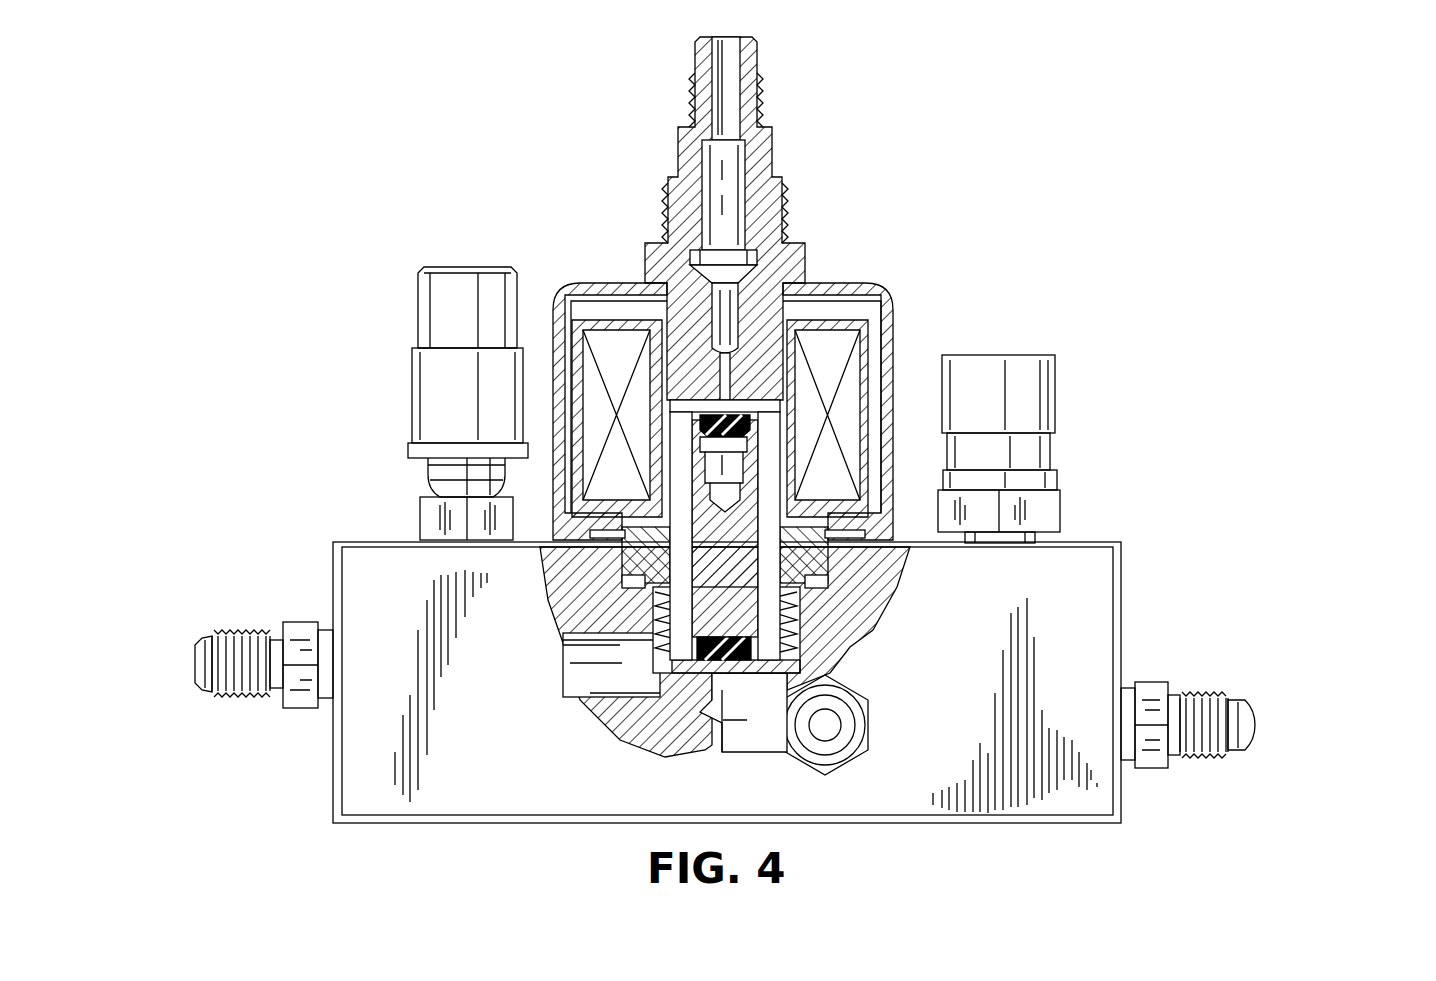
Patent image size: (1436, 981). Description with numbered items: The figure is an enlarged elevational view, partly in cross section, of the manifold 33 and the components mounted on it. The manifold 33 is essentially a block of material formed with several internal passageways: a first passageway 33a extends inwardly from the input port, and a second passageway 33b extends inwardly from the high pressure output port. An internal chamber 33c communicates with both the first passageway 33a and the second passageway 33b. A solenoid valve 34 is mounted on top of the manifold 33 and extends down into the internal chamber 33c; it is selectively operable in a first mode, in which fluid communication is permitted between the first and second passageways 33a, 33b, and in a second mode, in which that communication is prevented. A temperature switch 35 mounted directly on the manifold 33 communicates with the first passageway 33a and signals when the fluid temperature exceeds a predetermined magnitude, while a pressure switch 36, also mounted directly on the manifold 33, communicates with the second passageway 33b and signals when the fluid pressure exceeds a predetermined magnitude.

The manifold 33 is at (1057, 807).
The first passageway 33a is at (753, 700).
The second passageway 33b is at (560, 647).
The internal chamber 33c is at (797, 645).
The solenoid valve 34 is at (860, 288).
The temperature switch 35 is at (1043, 370).
The pressure switch 36 is at (437, 317).